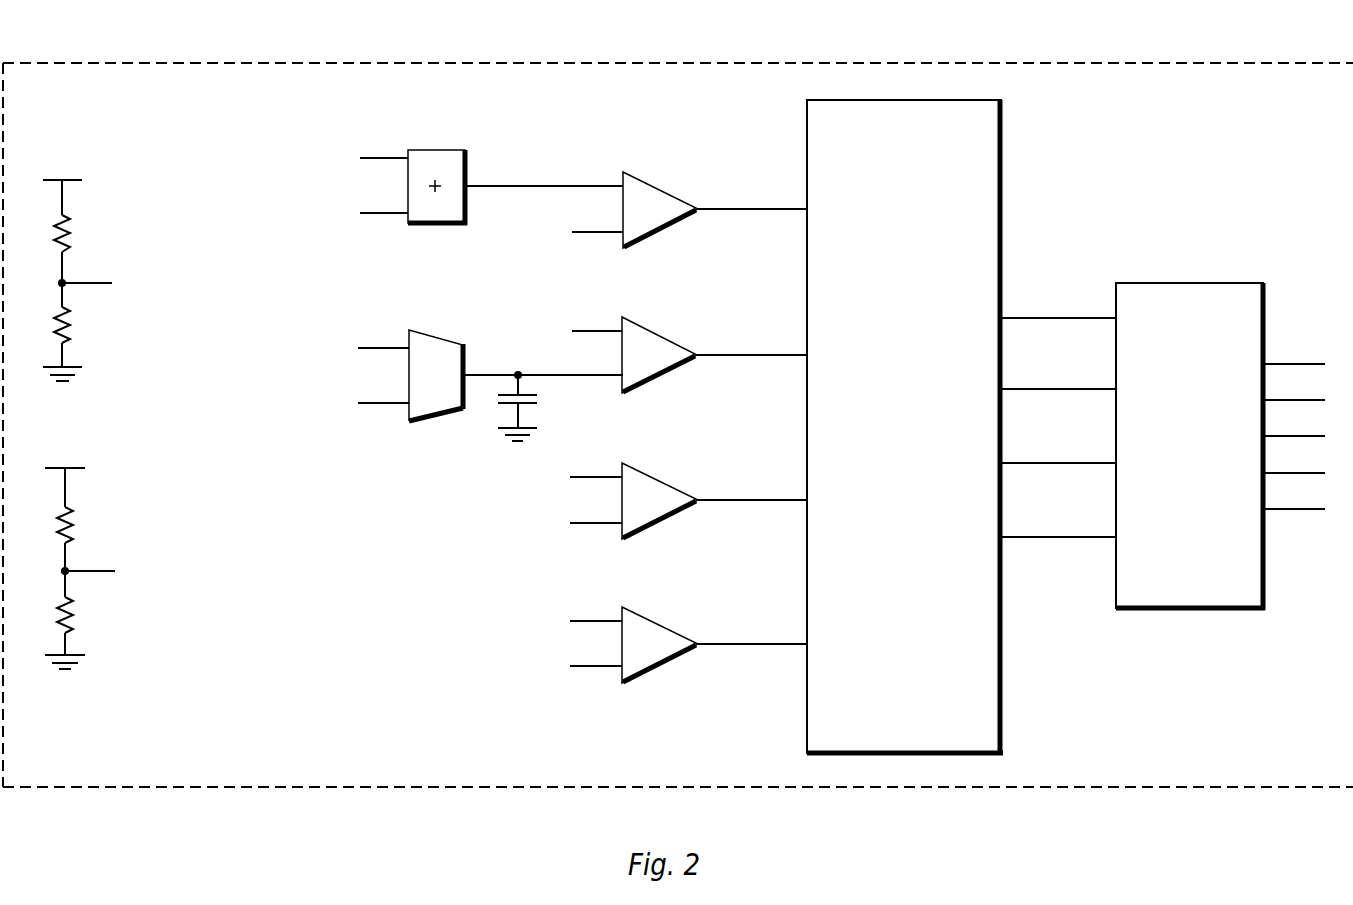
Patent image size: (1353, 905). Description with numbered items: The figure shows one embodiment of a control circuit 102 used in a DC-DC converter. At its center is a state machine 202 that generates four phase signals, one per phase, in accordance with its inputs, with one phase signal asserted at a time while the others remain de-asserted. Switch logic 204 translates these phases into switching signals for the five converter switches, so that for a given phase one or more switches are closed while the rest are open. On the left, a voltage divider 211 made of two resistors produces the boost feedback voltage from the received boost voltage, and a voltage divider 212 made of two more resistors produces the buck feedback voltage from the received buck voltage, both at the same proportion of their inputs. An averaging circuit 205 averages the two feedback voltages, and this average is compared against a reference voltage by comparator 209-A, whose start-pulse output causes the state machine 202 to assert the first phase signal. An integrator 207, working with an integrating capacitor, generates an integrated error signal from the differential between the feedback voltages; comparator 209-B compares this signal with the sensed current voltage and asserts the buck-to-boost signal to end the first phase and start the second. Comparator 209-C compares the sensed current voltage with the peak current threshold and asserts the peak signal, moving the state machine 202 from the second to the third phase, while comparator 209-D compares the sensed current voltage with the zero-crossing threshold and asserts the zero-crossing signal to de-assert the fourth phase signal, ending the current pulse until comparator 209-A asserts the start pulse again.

The control circuit 102 is at (613, 48).
The voltage divider 211 is at (118, 168).
The voltage divider 212 is at (128, 476).
The averaging circuit 205 is at (440, 150).
The integrator 207 is at (415, 328).
The comparator 209-A is at (637, 172).
The comparator 209-B is at (637, 317).
The comparator 209-C is at (636, 462).
The comparator 209-D is at (637, 607).
The state machine 202 is at (961, 427).
The switch logic 204 is at (1220, 446).